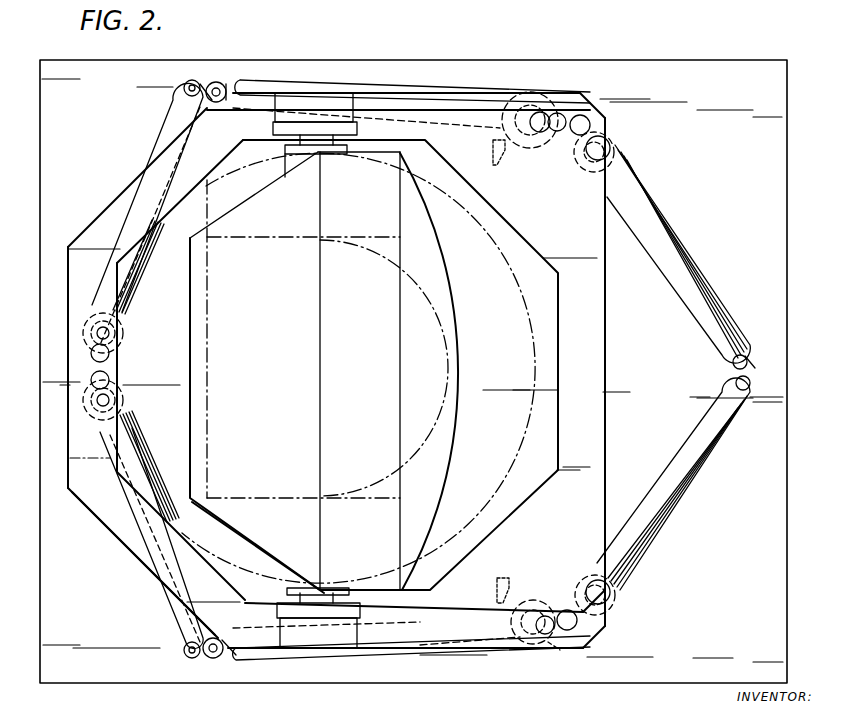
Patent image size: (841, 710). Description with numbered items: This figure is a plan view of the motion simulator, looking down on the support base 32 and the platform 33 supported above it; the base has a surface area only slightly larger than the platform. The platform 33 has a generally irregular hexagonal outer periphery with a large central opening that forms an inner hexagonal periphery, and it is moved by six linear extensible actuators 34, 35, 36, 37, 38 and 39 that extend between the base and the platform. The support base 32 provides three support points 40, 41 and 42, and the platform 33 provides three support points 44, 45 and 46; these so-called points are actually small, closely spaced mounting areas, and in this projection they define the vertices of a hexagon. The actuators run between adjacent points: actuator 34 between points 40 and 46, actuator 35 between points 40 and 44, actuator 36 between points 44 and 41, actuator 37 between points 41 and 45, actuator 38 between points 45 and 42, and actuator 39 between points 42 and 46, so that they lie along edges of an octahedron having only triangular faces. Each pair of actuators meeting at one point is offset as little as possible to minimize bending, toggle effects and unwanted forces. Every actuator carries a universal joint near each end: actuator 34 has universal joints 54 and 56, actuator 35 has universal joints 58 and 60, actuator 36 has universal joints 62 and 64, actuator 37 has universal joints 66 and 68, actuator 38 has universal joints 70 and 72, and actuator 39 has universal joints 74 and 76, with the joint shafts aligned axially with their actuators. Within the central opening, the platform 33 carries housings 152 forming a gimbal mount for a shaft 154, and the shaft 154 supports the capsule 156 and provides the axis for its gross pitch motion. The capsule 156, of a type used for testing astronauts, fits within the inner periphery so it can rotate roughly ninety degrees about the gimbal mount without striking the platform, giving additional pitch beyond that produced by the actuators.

The support base 32 is at (690, 72).
The platform 33 is at (607, 372).
The linear extensible actuator 34 is at (662, 475).
The linear extensible actuator 35 is at (700, 272).
The linear extensible actuator 36 is at (285, 83).
The linear extensible actuator 37 is at (170, 120).
The linear extensible actuator 38 is at (170, 600).
The linear extensible actuator 39 is at (338, 622).
The support point 40 is at (753, 362).
The support point 41 is at (207, 78).
The support point 42 is at (209, 664).
The support point 44 is at (582, 108).
The support point 45 is at (125, 362).
The support point 46 is at (566, 604).
The universal joint 54 is at (748, 392).
The universal joint 56 is at (606, 622).
The universal joint 58 is at (733, 364).
The universal joint 60 is at (606, 128).
The universal joint 62 is at (228, 84).
The universal joint 64 is at (547, 110).
The universal joint 66 is at (186, 82).
The universal joint 68 is at (91, 356).
The universal joint 70 is at (184, 653).
The universal joint 72 is at (110, 383).
The universal joint 74 is at (228, 656).
The universal joint 76 is at (548, 642).
The housing 152 is at (347, 108).
The shaft 154 is at (303, 148).
The capsule 156 is at (510, 270).